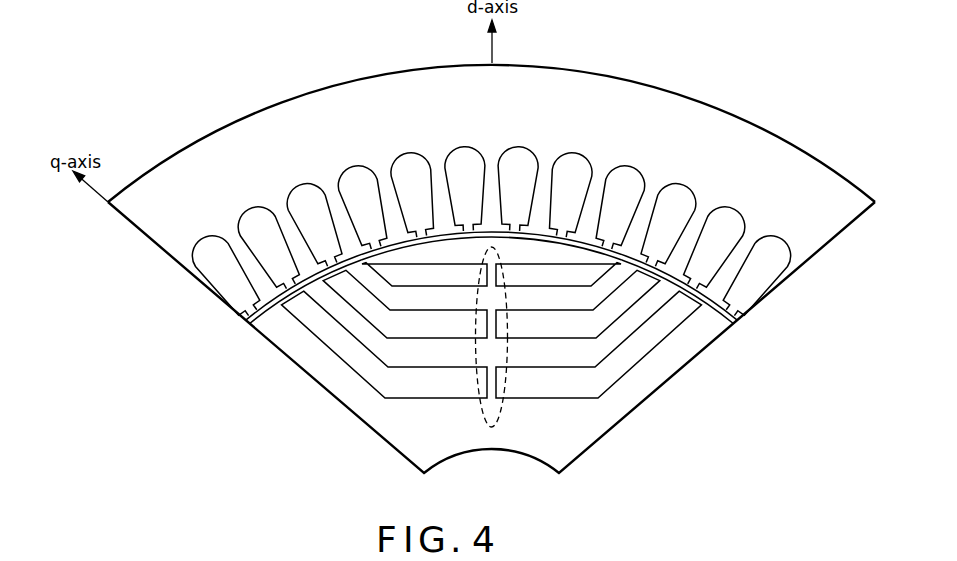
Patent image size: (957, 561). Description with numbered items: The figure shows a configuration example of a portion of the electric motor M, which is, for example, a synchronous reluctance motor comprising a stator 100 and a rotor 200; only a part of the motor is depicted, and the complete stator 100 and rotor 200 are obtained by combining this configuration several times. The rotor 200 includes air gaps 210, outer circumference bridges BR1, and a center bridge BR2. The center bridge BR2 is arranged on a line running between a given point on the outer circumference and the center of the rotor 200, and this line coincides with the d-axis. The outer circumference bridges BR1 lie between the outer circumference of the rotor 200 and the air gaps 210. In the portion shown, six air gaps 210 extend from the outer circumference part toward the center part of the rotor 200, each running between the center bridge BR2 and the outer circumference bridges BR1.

The electric motor M is at (615, 70).
The stator 100 is at (766, 160).
The rotor 200 is at (352, 388).
The air gaps 210 is at (415, 386).
The outer circumference bridges BR1 is at (262, 322).
The center bridge BR2 is at (497, 424).